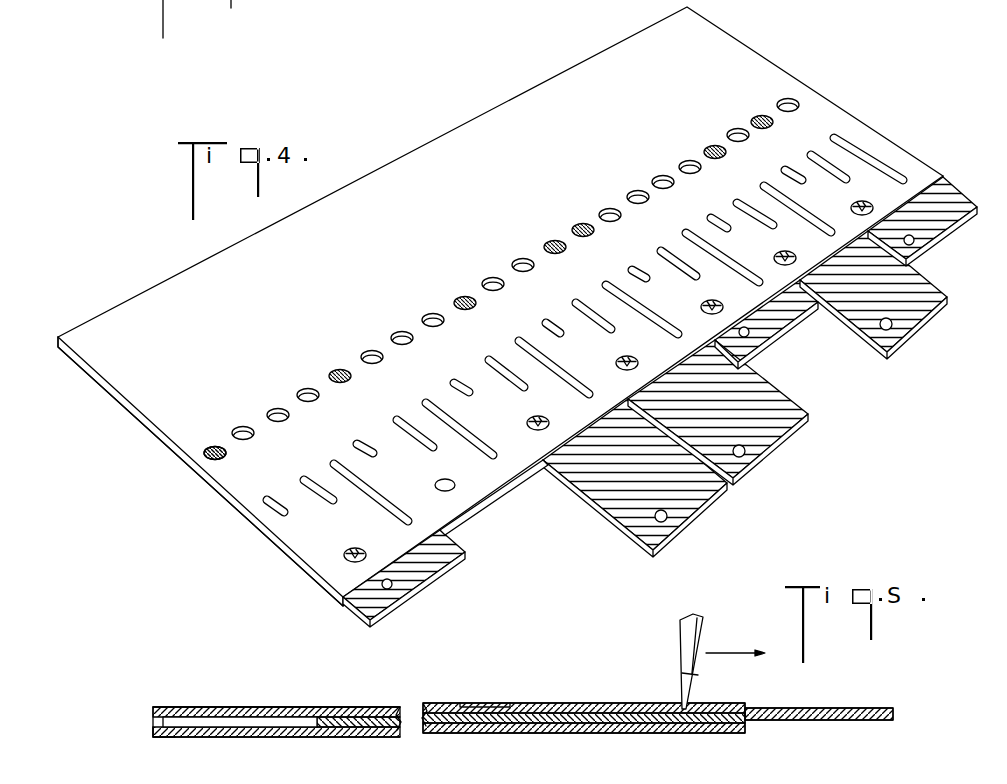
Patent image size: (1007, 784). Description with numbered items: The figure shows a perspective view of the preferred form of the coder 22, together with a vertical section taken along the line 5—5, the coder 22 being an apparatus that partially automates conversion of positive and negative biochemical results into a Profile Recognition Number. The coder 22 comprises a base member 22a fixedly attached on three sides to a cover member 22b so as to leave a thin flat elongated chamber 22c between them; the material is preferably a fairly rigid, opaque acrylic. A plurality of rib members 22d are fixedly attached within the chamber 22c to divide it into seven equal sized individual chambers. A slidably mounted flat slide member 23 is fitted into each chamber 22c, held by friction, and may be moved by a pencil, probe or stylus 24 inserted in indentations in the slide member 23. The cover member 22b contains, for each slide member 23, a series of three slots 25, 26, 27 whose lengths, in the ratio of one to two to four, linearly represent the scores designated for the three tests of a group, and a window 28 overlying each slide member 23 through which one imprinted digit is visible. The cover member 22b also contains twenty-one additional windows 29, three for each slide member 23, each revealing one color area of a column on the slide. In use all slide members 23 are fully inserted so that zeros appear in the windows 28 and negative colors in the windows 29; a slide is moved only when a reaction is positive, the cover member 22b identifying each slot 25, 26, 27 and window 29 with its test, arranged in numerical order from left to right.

In FIG. 4, the coder 22 is at (163, 271).
In FIG. 5, the coder 22 is at (221, 694).
In FIG. 5, the base member 22a is at (172, 739).
In FIG. 4, the cover member 22b is at (180, 430).
In FIG. 5, the cover member 22b is at (282, 708).
In FIG. 4, the chamber 22c is at (478, 510).
In FIG. 4, the rib member 22d is at (448, 525).
In FIG. 4, the slide member 23 is at (643, 543).
In FIG. 5, the slide member 23 is at (843, 707).
In FIG. 5, the stylus 24 is at (680, 643).
In FIG. 4, the first slot 25 is at (270, 506).
In FIG. 4, the second slot 26 is at (325, 503).
In FIG. 4, the third slot 27 is at (383, 503).
In FIG. 4, the window 28 is at (347, 558).
In FIG. 4, the additional window 29 is at (212, 460).
In FIG. 4, the section line 5 is at (372, 145).